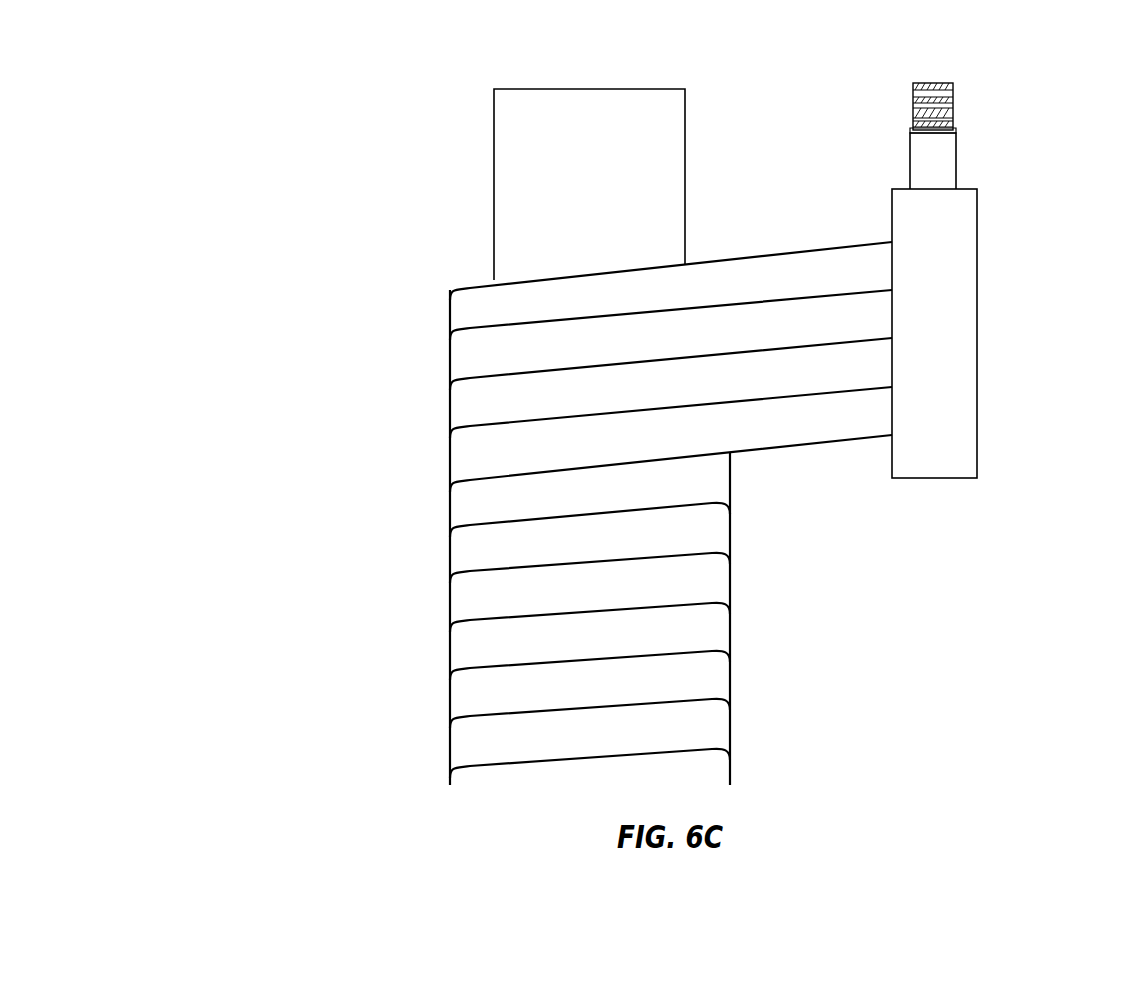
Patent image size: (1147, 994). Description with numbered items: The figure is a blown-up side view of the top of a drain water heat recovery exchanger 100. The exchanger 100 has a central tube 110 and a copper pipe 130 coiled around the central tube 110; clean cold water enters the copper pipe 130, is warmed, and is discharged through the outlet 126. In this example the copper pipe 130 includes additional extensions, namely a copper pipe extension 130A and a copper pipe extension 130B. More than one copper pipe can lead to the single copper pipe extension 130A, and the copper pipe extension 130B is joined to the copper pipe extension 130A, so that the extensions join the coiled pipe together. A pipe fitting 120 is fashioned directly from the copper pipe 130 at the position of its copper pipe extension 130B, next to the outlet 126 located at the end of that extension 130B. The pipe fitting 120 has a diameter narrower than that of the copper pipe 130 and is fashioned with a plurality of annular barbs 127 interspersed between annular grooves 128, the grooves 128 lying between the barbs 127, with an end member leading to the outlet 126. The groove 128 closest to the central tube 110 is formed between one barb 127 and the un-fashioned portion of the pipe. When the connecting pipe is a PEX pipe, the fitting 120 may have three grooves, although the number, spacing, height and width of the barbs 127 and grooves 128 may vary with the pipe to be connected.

The drain water heat recovery exchanger 100 is at (385, 609).
The central tube 110 is at (522, 173).
The pipe fitting 120 is at (907, 83).
The outlet 126 is at (935, 83).
The barbs 127 is at (953, 100).
The grooves 128 is at (953, 112).
The copper pipe 130 is at (480, 351).
The copper pipe extension 130A is at (956, 324).
The copper pipe extension 130B is at (950, 171).